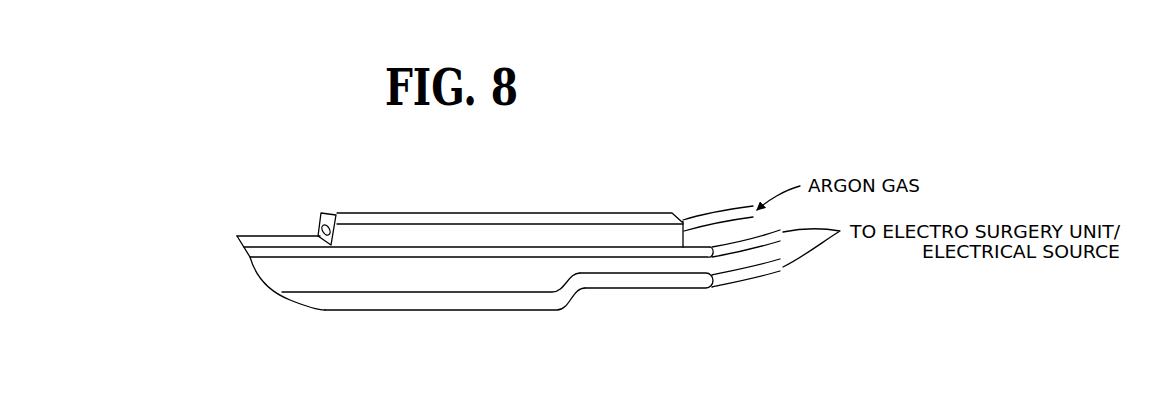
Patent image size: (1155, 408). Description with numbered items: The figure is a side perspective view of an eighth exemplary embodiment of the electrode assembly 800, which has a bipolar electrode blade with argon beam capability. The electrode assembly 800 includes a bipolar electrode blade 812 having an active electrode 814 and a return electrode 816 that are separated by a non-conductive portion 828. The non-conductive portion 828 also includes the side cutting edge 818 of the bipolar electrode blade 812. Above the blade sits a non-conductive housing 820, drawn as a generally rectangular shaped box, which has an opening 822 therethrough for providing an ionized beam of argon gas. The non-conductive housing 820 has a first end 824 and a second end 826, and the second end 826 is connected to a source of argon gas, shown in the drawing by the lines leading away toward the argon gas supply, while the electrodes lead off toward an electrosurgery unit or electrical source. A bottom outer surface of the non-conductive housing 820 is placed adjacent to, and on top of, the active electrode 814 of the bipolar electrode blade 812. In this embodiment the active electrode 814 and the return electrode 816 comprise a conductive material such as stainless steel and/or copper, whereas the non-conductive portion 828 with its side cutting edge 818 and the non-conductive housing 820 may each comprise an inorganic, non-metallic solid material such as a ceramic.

The electrode assembly 800 is at (627, 156).
The bipolar electrode blade 812 is at (545, 278).
The active electrode 814 is at (258, 236).
The return electrode 816 is at (350, 312).
The side cutting edge 818 is at (254, 281).
The non-conductive housing 820 is at (473, 209).
The opening 822 is at (334, 218).
The first end 824 is at (323, 213).
The second end 826 is at (682, 218).
The non-conductive portion 828 is at (435, 282).